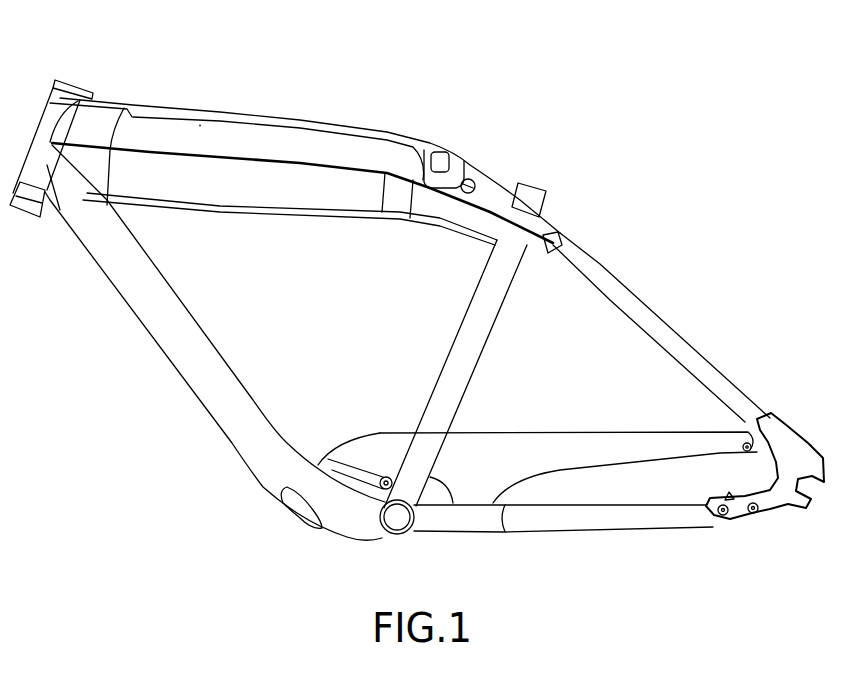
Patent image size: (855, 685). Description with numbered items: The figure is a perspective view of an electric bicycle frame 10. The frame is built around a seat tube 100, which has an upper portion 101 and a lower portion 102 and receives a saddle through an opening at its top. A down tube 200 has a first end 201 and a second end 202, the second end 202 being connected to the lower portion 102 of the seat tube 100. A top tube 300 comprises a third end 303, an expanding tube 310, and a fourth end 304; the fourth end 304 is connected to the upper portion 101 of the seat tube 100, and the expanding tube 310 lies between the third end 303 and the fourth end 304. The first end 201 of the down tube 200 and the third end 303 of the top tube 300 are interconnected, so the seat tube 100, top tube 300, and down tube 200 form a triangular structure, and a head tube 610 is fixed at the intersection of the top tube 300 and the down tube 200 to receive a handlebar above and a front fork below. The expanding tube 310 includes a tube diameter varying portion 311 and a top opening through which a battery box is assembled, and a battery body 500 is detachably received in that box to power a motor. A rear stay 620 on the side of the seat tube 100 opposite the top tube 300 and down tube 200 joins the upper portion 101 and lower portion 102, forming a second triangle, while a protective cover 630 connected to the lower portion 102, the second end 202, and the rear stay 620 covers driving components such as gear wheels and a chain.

The electric bicycle frame 10 is at (116, 476).
The seat tube 100 is at (465, 347).
The upper portion 101 is at (500, 262).
The lower portion 102 is at (418, 450).
The down tube 200 is at (147, 318).
The first end 201 is at (68, 214).
The second end 202 is at (323, 495).
The top tube 300 is at (157, 163).
The third end 303 is at (105, 118).
The fourth end 304 is at (487, 190).
The expanding tube 310 is at (223, 133).
The tube diameter varying portion 311 is at (287, 147).
The battery body 500 is at (385, 133).
The head tube 610 is at (44, 112).
The rear stay 620 is at (618, 513).
The protective cover 630 is at (558, 452).